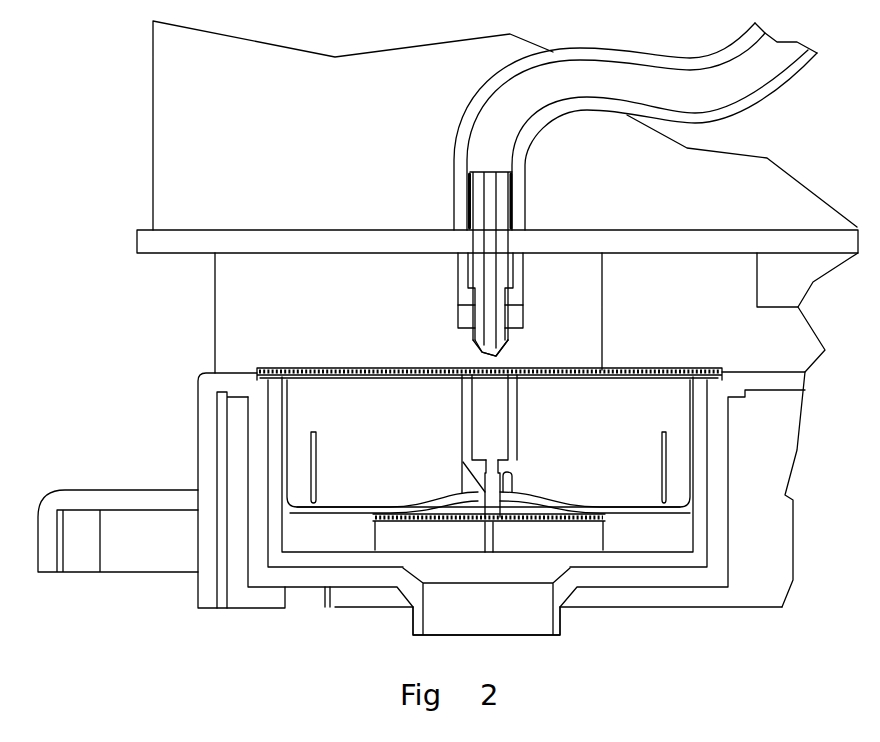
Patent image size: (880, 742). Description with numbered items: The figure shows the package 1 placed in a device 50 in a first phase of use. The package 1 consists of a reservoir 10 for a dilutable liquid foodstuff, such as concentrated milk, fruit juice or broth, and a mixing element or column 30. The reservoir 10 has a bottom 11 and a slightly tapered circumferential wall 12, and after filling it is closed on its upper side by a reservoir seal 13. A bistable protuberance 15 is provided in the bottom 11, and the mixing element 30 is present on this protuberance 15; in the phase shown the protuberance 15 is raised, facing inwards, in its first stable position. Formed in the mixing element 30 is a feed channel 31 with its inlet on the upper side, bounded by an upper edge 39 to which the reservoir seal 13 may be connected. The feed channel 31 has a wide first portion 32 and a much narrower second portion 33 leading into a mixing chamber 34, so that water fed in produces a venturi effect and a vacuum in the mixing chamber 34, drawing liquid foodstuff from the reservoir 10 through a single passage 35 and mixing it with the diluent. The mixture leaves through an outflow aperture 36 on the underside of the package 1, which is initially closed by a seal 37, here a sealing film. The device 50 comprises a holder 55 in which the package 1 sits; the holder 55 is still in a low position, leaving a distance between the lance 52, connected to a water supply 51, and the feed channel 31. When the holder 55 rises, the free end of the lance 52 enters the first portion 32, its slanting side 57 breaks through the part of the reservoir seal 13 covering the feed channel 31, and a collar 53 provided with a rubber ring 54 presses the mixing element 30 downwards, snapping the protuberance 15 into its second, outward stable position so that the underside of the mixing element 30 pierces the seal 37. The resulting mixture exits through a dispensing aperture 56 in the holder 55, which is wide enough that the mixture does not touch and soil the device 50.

The package 1 is at (694, 353).
The reservoir 10 is at (330, 393).
The bottom 11 is at (347, 502).
The circumferential wall 12 is at (280, 422).
The reservoir seal 13 is at (622, 370).
The protuberance 15 is at (605, 538).
The mixing element 30 is at (518, 383).
The feed channel 31 is at (490, 410).
The first portion 32 is at (472, 422).
The second portion 33 is at (498, 470).
The mixing chamber 34 is at (503, 493).
The passage 35 is at (467, 467).
The outflow aperture 36 is at (483, 520).
The seal 37 is at (417, 520).
The upper edge 39 is at (460, 370).
The device 50 is at (92, 216).
The water supply 51 is at (727, 83).
The lance 52 is at (503, 213).
The collar 53 is at (516, 292).
The rubber ring 54 is at (522, 312).
The holder 55 is at (200, 594).
The dispensing aperture 56 is at (542, 617).
The slanting side 57 is at (477, 355).